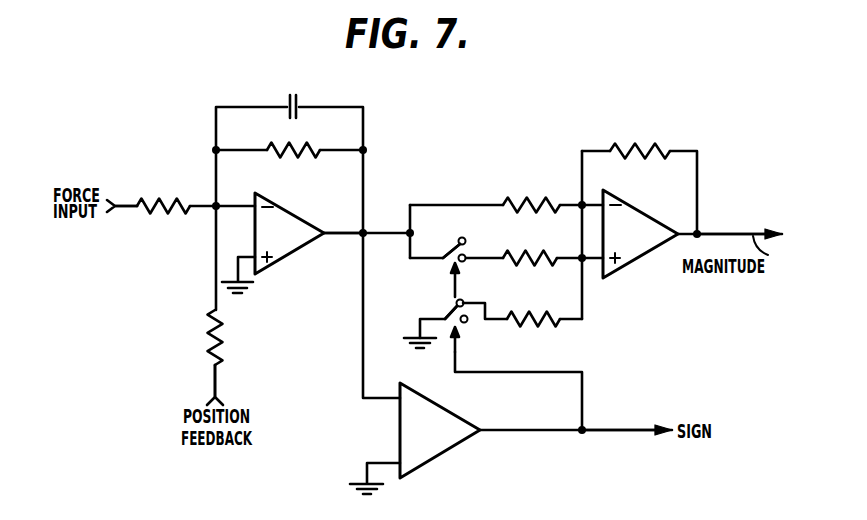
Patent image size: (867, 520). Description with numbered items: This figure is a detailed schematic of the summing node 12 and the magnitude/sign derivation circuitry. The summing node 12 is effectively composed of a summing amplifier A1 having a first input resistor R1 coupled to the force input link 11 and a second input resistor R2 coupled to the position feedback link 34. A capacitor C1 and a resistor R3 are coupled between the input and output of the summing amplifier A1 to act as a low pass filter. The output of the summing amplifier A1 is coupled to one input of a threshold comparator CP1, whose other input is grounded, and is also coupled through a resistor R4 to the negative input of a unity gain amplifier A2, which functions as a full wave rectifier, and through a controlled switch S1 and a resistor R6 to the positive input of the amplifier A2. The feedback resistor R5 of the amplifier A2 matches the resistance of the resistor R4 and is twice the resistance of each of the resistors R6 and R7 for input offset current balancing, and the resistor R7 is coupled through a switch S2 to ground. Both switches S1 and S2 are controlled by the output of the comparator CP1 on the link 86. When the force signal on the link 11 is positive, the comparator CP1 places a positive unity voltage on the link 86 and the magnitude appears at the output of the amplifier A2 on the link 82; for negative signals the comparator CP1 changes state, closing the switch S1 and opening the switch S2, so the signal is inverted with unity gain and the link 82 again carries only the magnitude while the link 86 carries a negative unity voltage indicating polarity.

The force input link 11 is at (117, 205).
The first input resistor R1 is at (185, 199).
The capacitor C1 is at (297, 100).
The resistor R3 is at (318, 149).
The summing amplifier A1 is at (289, 233).
The summing node 12 is at (347, 265).
The second input resistor R2 is at (228, 335).
The feedback link 34 is at (216, 388).
The controlled switch S1 is at (457, 250).
The switch S2 is at (447, 311).
The resistor R4 is at (518, 200).
The resistor R6 is at (534, 256).
The resistor R7 is at (528, 312).
The unity gain amplifier A2 is at (640, 234).
The feedback resistor R5 is at (644, 145).
The link 82 is at (717, 229).
The threshold comparator CP1 is at (440, 430).
The link 86 is at (614, 428).